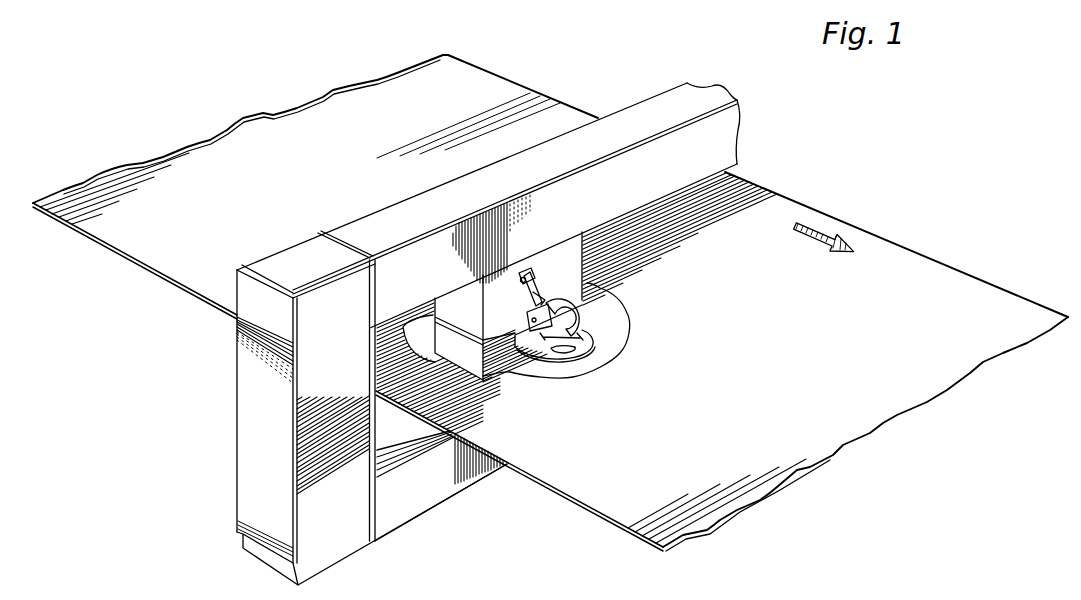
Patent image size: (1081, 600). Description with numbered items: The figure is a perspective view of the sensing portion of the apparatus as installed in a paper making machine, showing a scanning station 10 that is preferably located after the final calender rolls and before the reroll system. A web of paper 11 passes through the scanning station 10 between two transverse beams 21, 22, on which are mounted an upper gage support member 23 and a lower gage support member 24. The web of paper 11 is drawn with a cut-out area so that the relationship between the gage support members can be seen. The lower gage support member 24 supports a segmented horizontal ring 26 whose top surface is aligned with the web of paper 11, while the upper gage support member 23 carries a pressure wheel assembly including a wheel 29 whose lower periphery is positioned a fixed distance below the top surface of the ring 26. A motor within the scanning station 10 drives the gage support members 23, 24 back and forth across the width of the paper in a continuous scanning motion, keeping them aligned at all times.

The scanning station 10 is at (760, 147).
The web of paper 11 is at (945, 303).
The transverse beam 21 is at (418, 262).
The transverse beam 22 is at (460, 488).
The upper gage support member 23 is at (573, 258).
The lower gage support member 24 is at (504, 368).
The segmented horizontal ring 26 is at (590, 335).
The wheel 29 is at (580, 310).